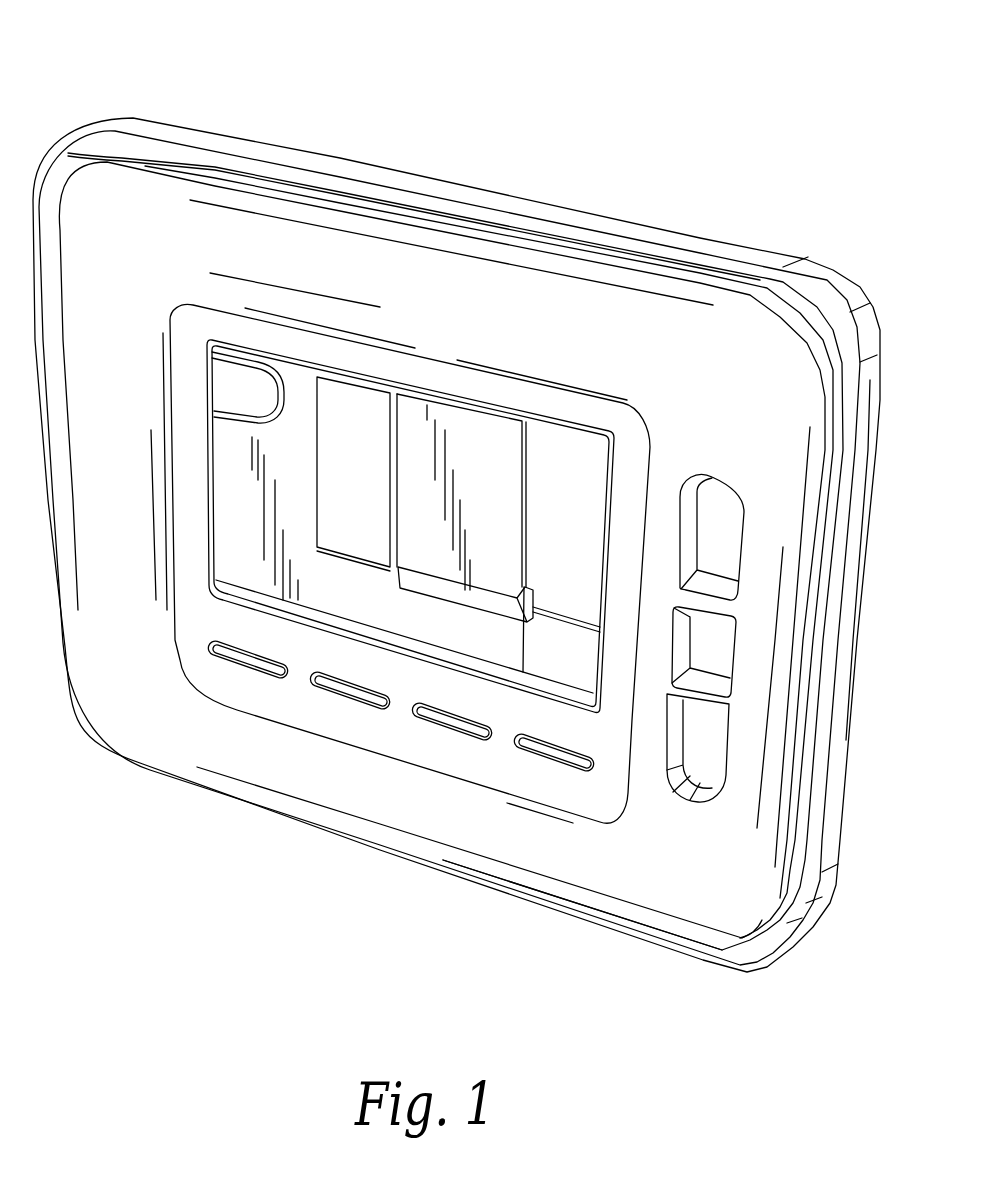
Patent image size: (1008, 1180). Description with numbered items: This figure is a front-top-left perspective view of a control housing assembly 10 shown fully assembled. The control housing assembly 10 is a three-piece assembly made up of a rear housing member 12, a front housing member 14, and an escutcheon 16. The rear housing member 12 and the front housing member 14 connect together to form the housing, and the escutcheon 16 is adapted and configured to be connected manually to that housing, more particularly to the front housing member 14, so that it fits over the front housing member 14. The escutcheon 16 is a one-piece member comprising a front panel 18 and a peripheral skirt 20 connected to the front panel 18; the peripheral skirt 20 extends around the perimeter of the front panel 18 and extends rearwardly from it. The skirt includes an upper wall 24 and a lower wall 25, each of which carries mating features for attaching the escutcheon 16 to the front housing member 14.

The control housing assembly 10 is at (129, 95).
The rear housing member 12 is at (266, 132).
The front housing member 14 is at (440, 377).
The escutcheon 16 is at (197, 163).
The front panel 18 is at (577, 345).
The peripheral skirt 20 is at (838, 605).
The upper wall 24 is at (585, 245).
The lower wall 25 is at (620, 932).